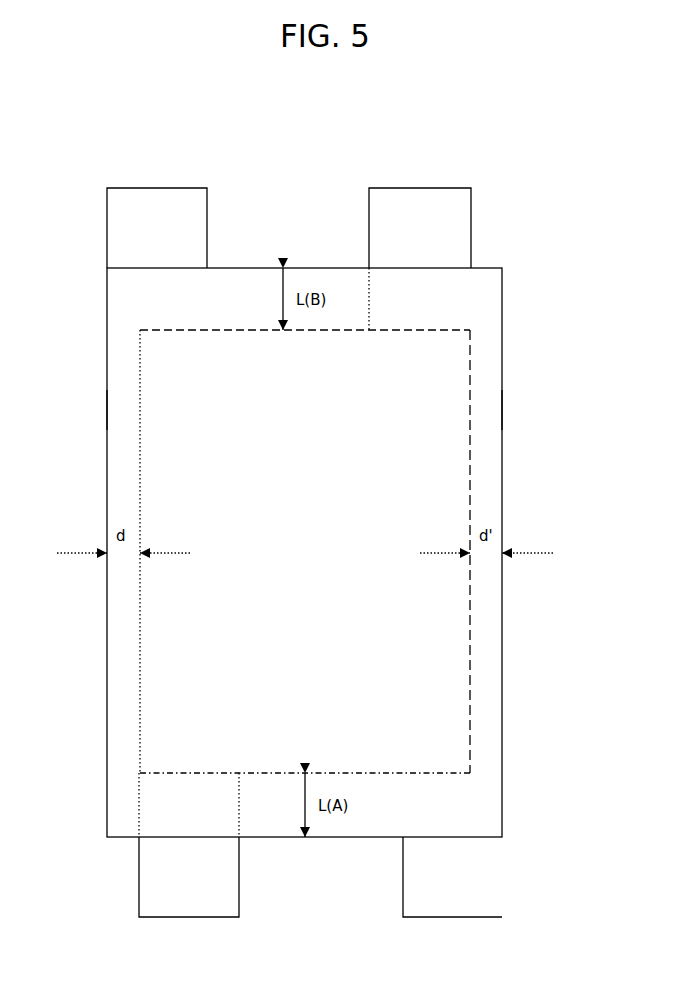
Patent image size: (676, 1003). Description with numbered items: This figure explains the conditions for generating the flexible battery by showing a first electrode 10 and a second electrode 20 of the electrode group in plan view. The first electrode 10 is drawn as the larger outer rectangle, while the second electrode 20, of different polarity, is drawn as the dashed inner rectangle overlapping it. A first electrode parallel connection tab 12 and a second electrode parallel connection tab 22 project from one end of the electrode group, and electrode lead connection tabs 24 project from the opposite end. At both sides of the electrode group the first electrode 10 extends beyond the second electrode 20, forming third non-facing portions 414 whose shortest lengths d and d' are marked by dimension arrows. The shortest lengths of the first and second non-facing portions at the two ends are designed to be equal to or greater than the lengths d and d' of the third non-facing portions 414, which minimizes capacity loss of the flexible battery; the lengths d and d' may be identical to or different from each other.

The first electrode 10 is at (503, 685).
The first electrode parallel connection tab 12 is at (153, 205).
The second electrode parallel connection tab 22 is at (418, 205).
The second electrode 20 is at (470, 460).
The third non-facing portion 414 is at (125, 413).
The electrode lead connection tab 24 is at (188, 900).